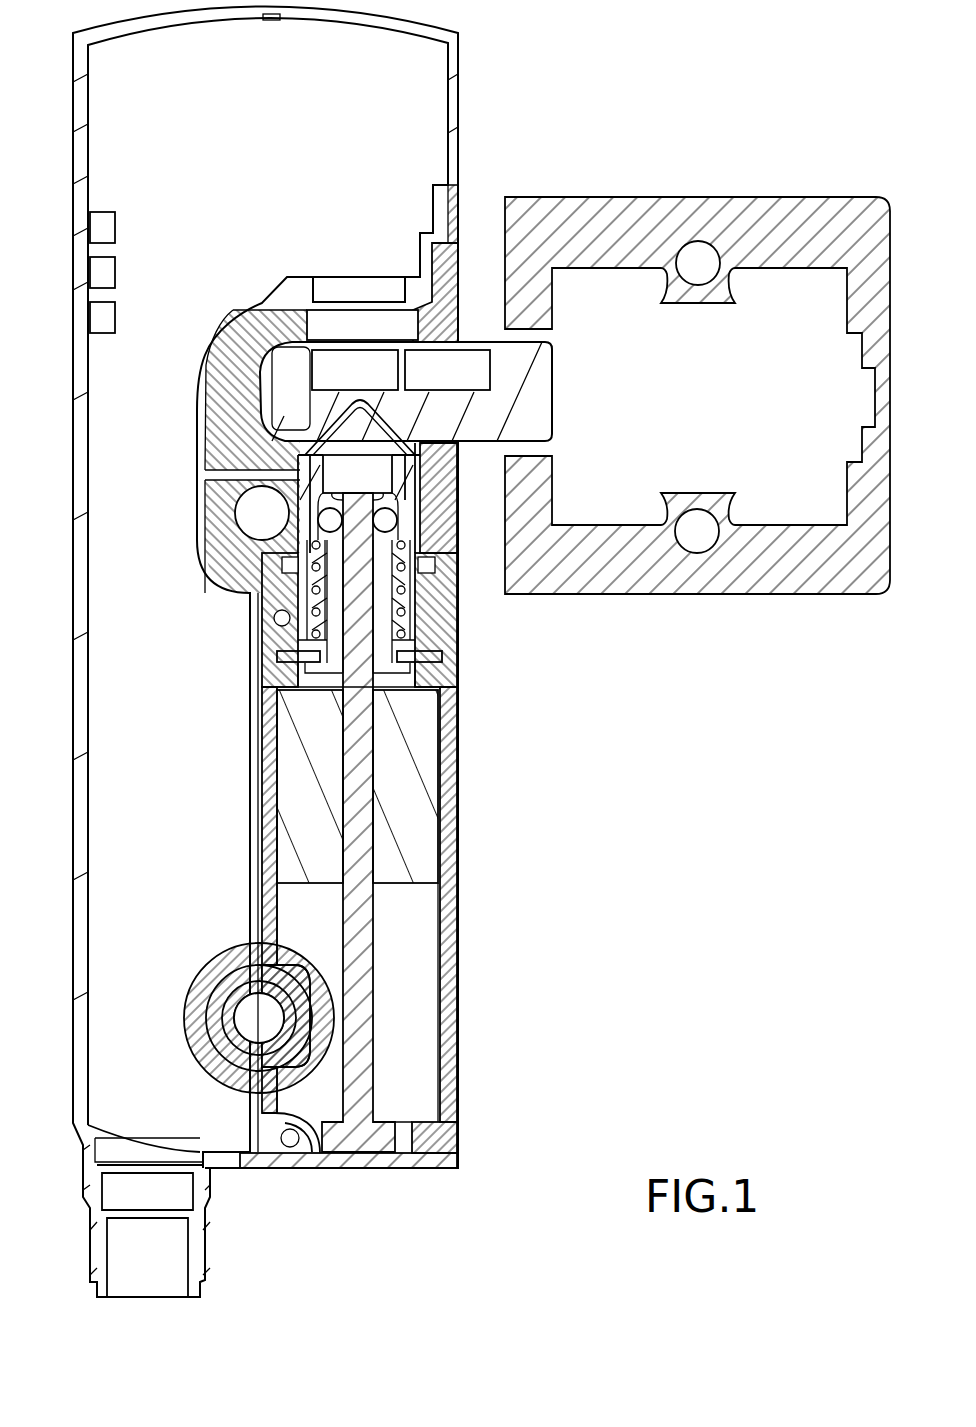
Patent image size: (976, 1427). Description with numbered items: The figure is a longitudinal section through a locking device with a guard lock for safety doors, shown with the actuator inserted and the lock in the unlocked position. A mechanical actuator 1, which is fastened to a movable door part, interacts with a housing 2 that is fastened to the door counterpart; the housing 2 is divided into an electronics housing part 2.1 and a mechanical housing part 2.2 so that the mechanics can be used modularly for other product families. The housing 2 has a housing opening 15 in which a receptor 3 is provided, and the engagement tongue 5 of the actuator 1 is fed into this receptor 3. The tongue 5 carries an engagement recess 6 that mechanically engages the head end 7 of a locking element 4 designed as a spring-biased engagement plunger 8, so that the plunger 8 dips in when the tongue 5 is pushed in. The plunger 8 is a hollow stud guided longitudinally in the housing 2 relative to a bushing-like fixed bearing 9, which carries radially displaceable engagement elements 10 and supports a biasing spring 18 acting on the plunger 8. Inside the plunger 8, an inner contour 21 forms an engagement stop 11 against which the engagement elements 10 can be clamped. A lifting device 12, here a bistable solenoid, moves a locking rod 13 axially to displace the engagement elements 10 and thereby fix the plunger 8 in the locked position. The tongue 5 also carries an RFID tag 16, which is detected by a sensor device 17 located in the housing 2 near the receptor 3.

The mechanical actuator 1 is at (647, 197).
The housing 2 is at (458, 98).
The electronics housing part 2.1 is at (153, 859).
The mechanical housing part 2.2 is at (408, 1038).
The receptor 3 is at (457, 448).
The locking element 4 is at (294, 463).
The engagement tongue 5 is at (434, 391).
The engagement recess 6 is at (320, 433).
The head end 7 is at (337, 433).
The engagement plunger 8 is at (410, 508).
The fixed bearing 9 is at (397, 667).
The engagement elements 10 is at (327, 518).
The engagement stop 11 is at (318, 508).
The lifting device 12 is at (418, 758).
The locking rod 13 is at (360, 970).
The housing opening 15 is at (266, 373).
The RFID tag 16 is at (364, 381).
The sensor device 17 is at (342, 322).
The biasing spring 18 is at (405, 607).
The inner contour 21 is at (380, 460).